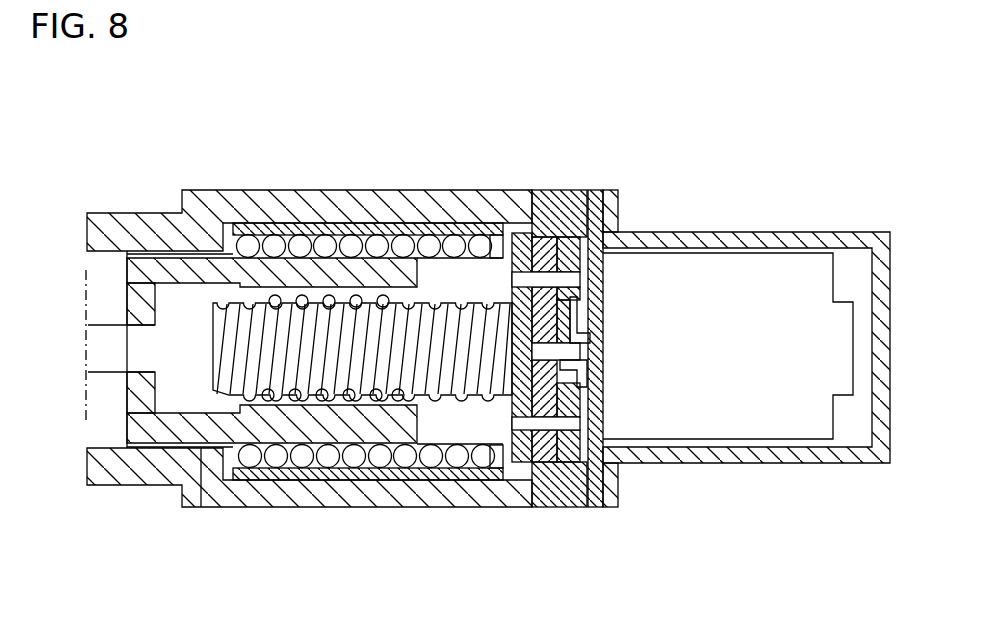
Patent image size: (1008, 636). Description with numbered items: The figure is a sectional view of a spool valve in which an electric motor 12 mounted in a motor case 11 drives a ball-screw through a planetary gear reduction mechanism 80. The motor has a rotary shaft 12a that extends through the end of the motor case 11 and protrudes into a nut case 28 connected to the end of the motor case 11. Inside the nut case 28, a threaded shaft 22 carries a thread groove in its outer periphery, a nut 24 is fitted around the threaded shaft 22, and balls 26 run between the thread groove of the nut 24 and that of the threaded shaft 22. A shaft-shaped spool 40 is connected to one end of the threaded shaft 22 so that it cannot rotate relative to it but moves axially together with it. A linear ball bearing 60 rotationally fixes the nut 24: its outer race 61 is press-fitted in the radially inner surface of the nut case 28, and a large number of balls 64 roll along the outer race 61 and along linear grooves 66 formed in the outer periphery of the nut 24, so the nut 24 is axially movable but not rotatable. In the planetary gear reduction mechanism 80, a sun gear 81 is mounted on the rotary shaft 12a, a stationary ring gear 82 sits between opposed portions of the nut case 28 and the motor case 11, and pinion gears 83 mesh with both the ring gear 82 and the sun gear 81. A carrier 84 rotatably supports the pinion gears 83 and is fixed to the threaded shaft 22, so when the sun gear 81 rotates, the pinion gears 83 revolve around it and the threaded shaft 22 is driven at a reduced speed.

The motor case 11 is at (823, 236).
The electric motor 12 is at (733, 262).
The rotary shaft 12a is at (580, 346).
The threaded shaft 22 is at (437, 302).
The nut 24 is at (370, 282).
The balls 26 is at (330, 295).
The nut case 28 is at (267, 497).
The spool 40 is at (110, 316).
The linear ball bearing 60 is at (459, 490).
The outer race 61 is at (342, 474).
The balls 64 is at (300, 236).
The linear grooves 66 is at (200, 450).
The planetary gear reduction mechanism 80 is at (597, 294).
The sun gear 81 is at (578, 374).
The ring gear 82 is at (562, 190).
The pinion gears 83 is at (603, 235).
The carrier 84 is at (512, 232).